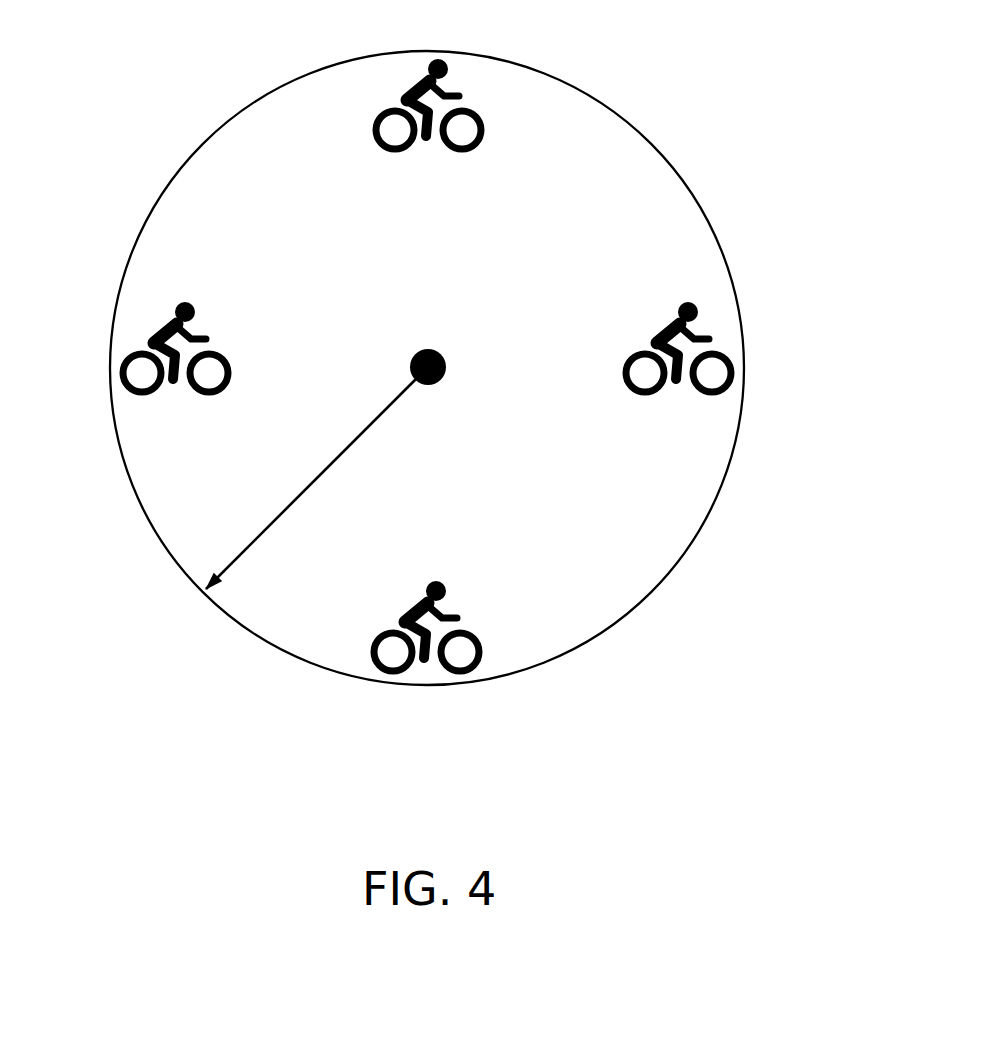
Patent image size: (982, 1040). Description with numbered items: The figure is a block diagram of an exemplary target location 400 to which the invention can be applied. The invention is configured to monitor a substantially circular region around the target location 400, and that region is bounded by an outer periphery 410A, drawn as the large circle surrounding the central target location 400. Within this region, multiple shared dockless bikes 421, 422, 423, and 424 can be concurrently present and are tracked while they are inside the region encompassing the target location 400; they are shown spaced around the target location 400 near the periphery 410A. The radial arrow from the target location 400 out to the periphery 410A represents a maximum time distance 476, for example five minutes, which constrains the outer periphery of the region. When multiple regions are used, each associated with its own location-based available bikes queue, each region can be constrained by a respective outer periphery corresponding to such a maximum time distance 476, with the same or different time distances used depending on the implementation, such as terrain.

The target location 400 is at (200, 68).
The periphery 410A is at (640, 124).
The shared dockless bike 421 is at (467, 68).
The shared dockless bike 422 is at (730, 328).
The shared dockless bike 423 is at (496, 664).
The shared dockless bike 424 is at (138, 323).
The maximum time distance 476 is at (234, 545).